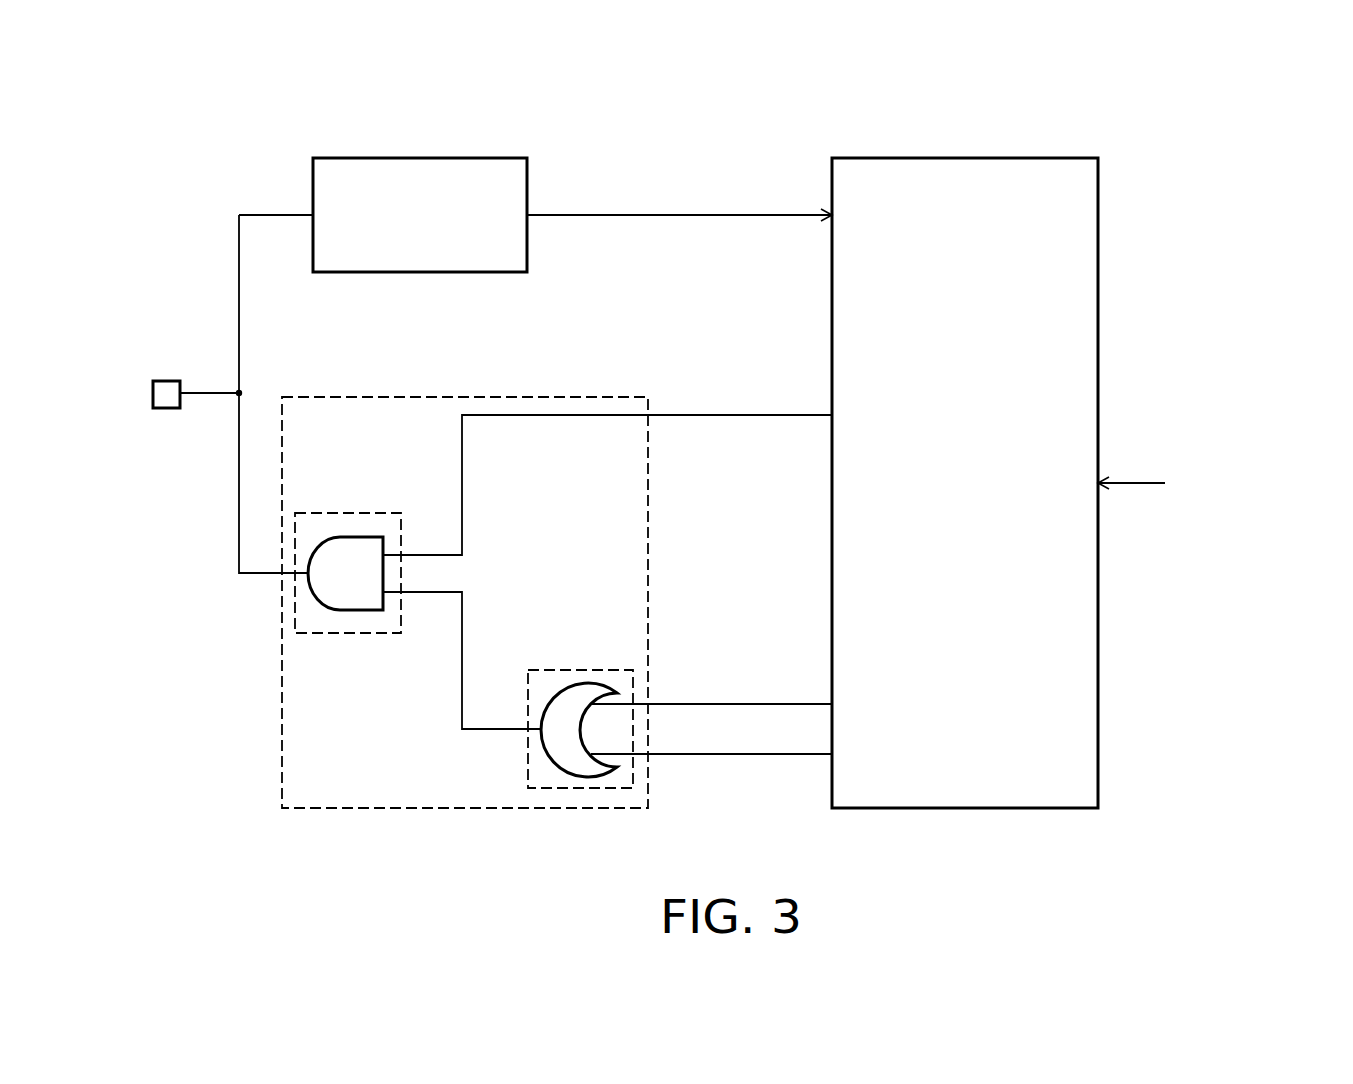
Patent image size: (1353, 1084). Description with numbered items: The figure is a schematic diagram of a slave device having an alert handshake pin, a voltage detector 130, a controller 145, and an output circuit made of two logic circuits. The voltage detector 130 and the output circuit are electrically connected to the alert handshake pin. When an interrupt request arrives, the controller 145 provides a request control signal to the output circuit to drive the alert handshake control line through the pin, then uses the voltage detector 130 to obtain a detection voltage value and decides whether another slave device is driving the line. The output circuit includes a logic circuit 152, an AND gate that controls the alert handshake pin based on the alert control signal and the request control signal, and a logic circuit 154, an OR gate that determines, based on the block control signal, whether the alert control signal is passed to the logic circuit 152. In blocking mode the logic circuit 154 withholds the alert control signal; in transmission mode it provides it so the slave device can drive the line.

The voltage detector 130 is at (314, 158).
The controller 145 is at (833, 158).
The logic circuit 152 is at (296, 513).
The logic circuit 154 is at (530, 670).